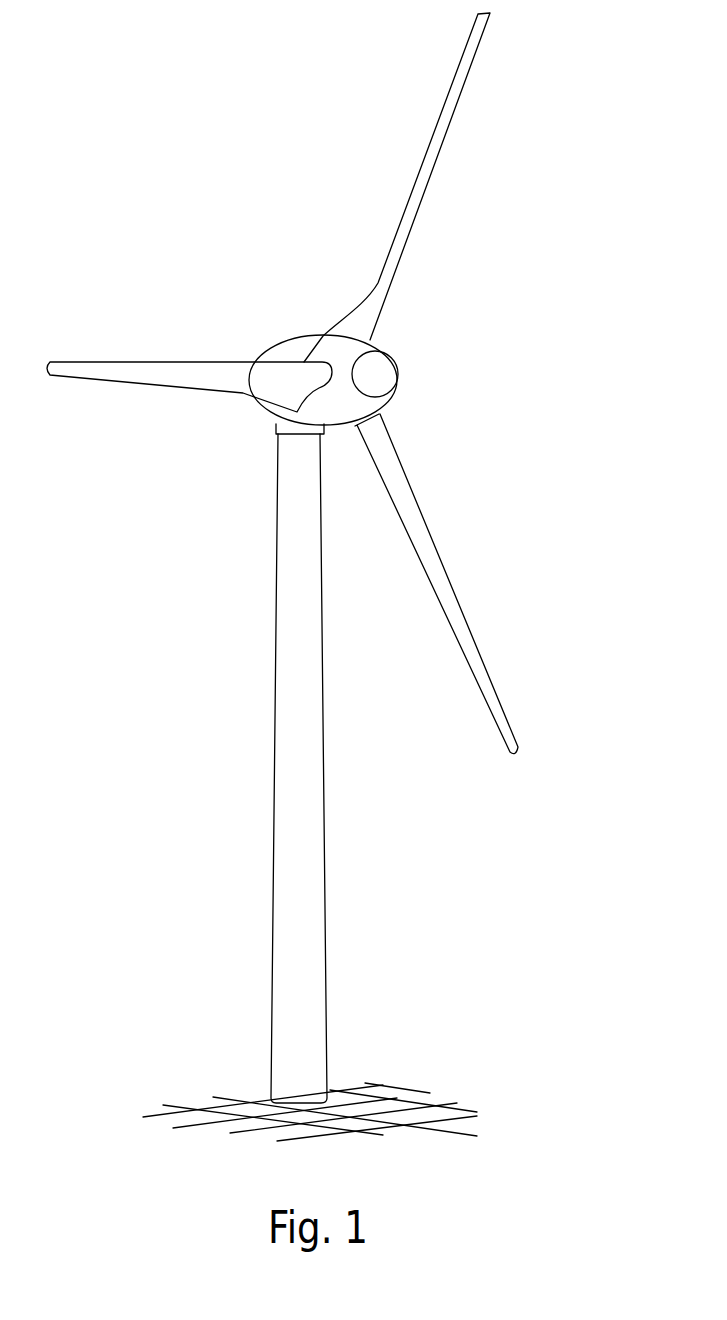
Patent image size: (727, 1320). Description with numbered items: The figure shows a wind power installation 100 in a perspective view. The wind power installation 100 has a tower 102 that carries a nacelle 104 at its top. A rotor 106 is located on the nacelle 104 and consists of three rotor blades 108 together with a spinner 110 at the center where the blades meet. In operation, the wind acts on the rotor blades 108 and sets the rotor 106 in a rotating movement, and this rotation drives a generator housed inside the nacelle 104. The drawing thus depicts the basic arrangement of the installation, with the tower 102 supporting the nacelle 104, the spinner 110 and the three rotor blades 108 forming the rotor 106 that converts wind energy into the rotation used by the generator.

The wind power installation 100 is at (219, 501).
The tower 102 is at (312, 862).
The nacelle 104 is at (285, 352).
The rotor 106 is at (500, 258).
The rotor blades 108 is at (455, 88).
The spinner 110 is at (383, 372).